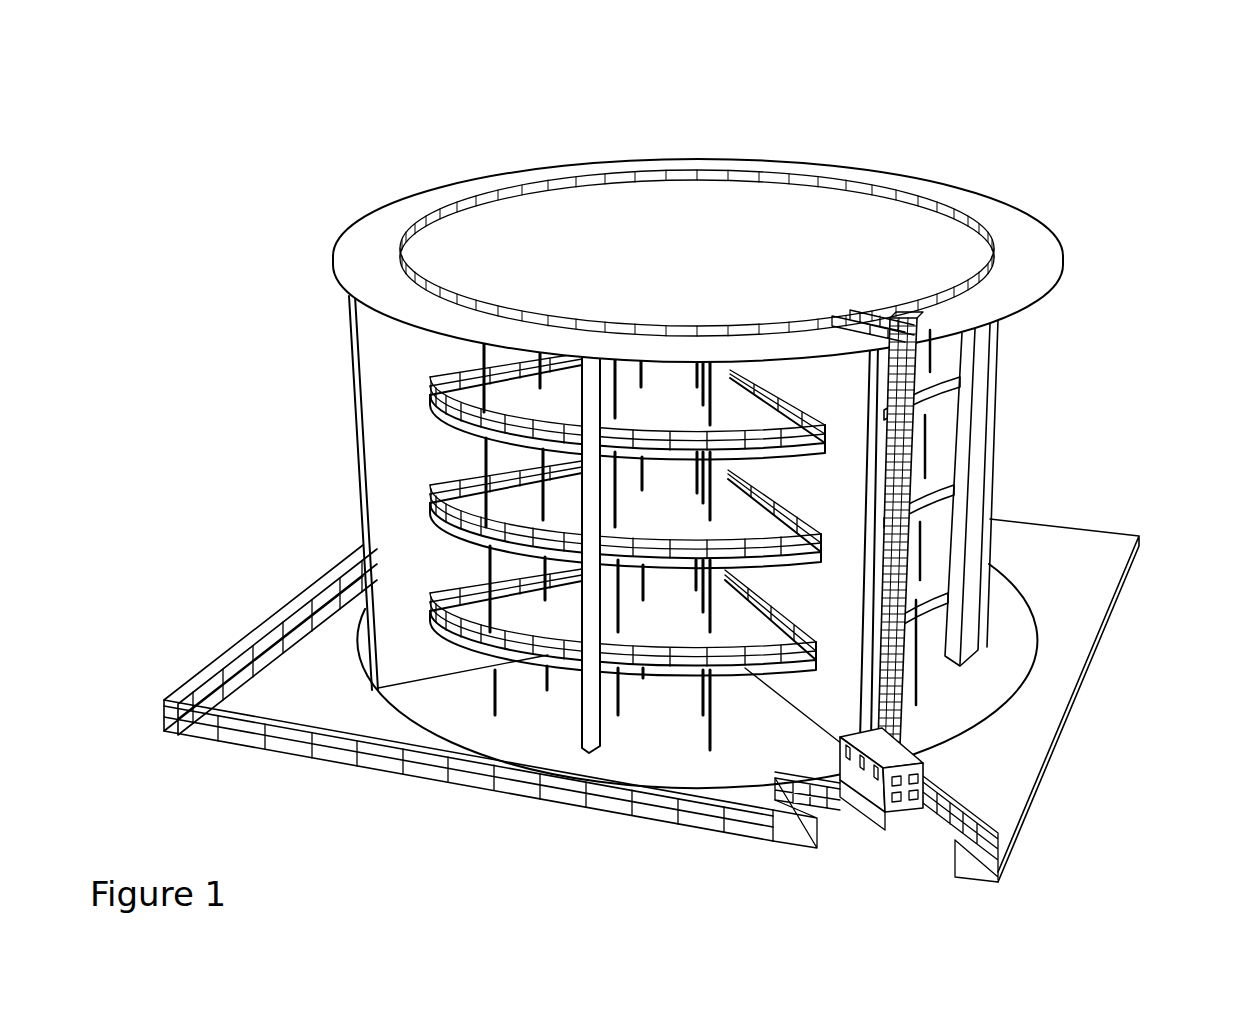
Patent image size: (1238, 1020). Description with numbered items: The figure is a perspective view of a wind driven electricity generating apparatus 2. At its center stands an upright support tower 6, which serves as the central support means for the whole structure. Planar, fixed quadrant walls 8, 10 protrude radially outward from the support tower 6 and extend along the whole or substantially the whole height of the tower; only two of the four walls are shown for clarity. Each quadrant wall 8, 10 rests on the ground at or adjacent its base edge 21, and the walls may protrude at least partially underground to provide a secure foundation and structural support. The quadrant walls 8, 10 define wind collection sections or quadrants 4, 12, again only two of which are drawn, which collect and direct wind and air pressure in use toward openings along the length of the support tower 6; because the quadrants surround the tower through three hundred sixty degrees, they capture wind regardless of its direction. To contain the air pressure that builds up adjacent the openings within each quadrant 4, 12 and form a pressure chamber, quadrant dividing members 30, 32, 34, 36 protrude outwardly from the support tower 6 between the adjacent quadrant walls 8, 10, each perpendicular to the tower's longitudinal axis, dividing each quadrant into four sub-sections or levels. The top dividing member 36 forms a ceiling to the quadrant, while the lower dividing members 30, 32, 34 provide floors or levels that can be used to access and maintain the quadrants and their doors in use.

The wind driven electricity generating apparatus 2 is at (689, 470).
The wind collection section or quadrant 4 is at (631, 738).
The support tower 6 is at (638, 460).
The quadrant wall 8 is at (412, 518).
The quadrant wall 10 is at (838, 624).
The wind collection section or quadrant 12 is at (938, 639).
The base edge 21 is at (410, 696).
The quadrant dividing member 30 is at (741, 632).
The quadrant dividing member 32 is at (556, 512).
The quadrant dividing member 34 is at (432, 378).
The top dividing member 36 is at (378, 240).